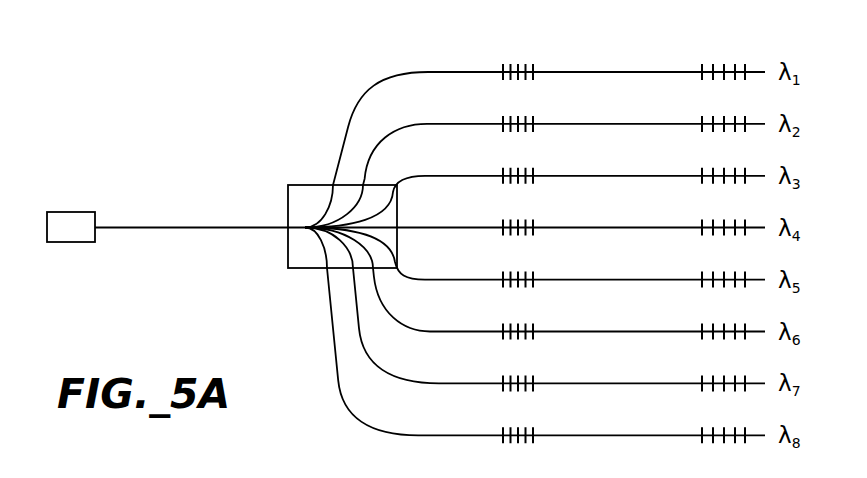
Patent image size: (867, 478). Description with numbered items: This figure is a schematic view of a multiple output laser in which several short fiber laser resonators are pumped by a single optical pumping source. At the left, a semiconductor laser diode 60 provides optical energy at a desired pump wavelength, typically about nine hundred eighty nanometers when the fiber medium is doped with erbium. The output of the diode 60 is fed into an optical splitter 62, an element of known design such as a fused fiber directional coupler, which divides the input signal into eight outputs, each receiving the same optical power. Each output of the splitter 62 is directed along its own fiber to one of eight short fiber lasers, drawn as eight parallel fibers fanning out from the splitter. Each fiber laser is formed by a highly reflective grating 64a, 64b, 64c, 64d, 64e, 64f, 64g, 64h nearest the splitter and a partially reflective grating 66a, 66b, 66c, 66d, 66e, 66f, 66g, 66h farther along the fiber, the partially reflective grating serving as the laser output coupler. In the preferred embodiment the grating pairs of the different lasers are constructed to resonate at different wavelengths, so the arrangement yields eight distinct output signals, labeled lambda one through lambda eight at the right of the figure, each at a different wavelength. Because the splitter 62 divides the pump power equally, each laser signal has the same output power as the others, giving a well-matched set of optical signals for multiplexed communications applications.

The semiconductor laser diode 60 is at (63, 242).
The optical splitter 62 is at (315, 268).
The highly reflective grating 64a is at (517, 62).
The highly reflective grating 64b is at (517, 114).
The highly reflective grating 64c is at (517, 166).
The highly reflective grating 64d is at (517, 218).
The highly reflective grating 64e is at (517, 270).
The highly reflective grating 64f is at (517, 322).
The highly reflective grating 64g is at (517, 373).
The highly reflective grating 64h is at (517, 425).
The partially reflective grating 66a is at (727, 62).
The partially reflective grating 66b is at (727, 114).
The partially reflective grating 66c is at (727, 166).
The partially reflective grating 66d is at (727, 218).
The partially reflective grating 66e is at (727, 270).
The partially reflective grating 66f is at (727, 322).
The partially reflective grating 66g is at (727, 373).
The partially reflective grating 66h is at (727, 425).